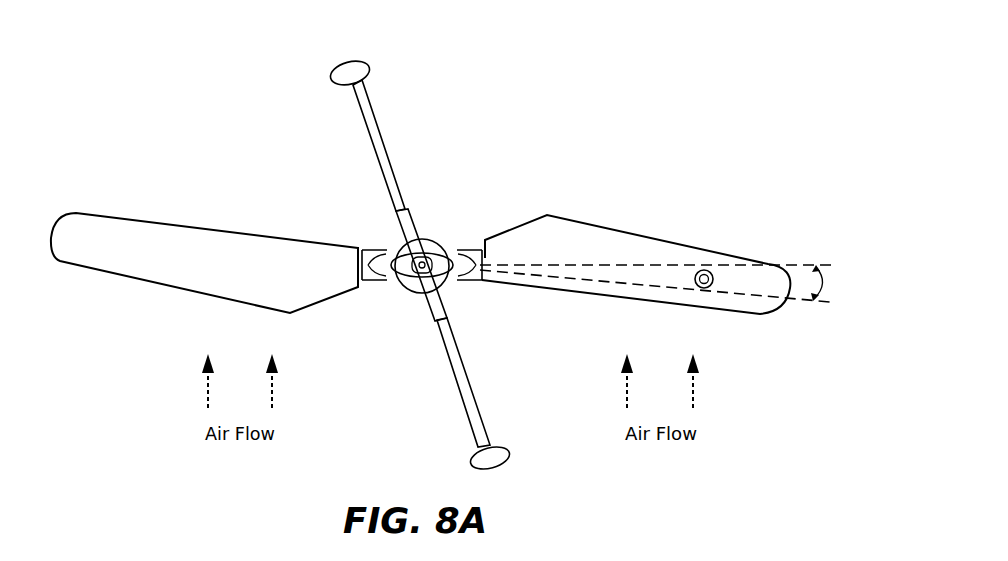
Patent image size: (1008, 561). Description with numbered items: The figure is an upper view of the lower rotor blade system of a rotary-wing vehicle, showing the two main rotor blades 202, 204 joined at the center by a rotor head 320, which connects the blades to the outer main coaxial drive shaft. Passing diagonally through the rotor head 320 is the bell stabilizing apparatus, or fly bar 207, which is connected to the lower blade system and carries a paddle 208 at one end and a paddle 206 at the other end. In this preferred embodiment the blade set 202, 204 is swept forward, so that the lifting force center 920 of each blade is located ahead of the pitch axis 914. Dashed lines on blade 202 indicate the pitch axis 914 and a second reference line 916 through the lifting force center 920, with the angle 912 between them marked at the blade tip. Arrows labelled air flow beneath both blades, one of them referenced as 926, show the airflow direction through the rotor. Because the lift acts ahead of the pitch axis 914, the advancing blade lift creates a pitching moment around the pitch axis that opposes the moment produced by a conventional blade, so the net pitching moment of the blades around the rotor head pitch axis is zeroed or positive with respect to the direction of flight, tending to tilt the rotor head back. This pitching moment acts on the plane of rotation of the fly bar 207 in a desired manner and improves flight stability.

The lower rotor blade 202 is at (612, 235).
The lower rotor blade 204 is at (257, 243).
The flybar paddle 206 is at (498, 443).
The bell stabilizing apparatus 207 is at (393, 175).
The flybar paddle 208 is at (368, 72).
The rotor head 320 is at (435, 243).
The blade pitch angle 912 is at (838, 293).
The pitch axis 914 is at (693, 262).
The blade chord line 916 is at (752, 297).
The lifting force center 920 is at (704, 288).
The air flow direction 926 is at (690, 402).